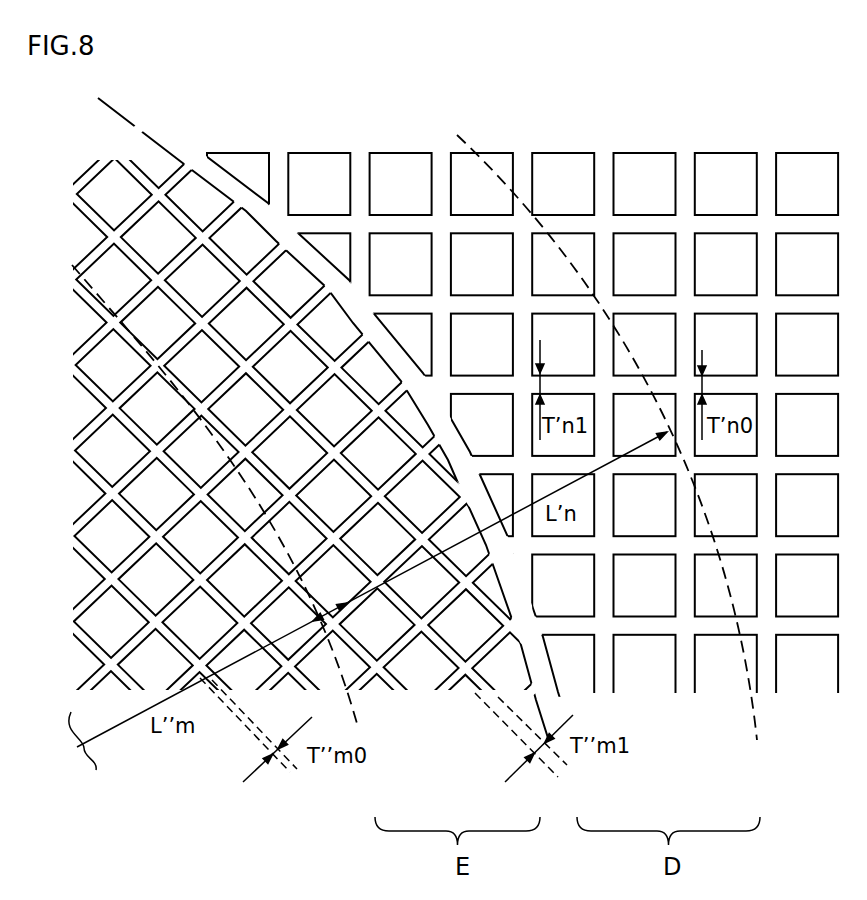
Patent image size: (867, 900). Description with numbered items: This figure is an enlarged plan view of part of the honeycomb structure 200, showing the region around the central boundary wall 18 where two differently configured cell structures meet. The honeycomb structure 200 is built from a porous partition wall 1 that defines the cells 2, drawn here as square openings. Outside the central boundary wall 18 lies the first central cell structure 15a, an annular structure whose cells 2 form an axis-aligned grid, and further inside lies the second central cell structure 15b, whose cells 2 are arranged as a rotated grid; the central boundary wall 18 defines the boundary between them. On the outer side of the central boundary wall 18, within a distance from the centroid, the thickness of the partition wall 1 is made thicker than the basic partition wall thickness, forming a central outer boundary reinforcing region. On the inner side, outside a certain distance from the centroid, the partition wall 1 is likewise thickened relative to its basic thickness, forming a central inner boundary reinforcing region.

The honeycomb structure 200 is at (791, 37).
The partition wall 1 is at (200, 240).
The cell 2 is at (107, 277).
The central boundary wall 18 is at (288, 232).
The first central cell structure 15a is at (763, 622).
The second central cell structure 15b is at (173, 632).